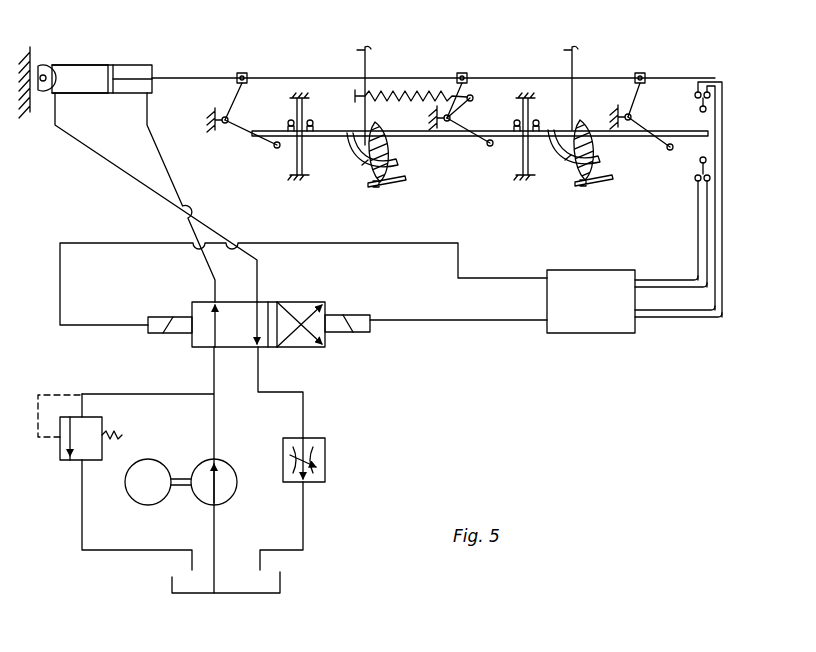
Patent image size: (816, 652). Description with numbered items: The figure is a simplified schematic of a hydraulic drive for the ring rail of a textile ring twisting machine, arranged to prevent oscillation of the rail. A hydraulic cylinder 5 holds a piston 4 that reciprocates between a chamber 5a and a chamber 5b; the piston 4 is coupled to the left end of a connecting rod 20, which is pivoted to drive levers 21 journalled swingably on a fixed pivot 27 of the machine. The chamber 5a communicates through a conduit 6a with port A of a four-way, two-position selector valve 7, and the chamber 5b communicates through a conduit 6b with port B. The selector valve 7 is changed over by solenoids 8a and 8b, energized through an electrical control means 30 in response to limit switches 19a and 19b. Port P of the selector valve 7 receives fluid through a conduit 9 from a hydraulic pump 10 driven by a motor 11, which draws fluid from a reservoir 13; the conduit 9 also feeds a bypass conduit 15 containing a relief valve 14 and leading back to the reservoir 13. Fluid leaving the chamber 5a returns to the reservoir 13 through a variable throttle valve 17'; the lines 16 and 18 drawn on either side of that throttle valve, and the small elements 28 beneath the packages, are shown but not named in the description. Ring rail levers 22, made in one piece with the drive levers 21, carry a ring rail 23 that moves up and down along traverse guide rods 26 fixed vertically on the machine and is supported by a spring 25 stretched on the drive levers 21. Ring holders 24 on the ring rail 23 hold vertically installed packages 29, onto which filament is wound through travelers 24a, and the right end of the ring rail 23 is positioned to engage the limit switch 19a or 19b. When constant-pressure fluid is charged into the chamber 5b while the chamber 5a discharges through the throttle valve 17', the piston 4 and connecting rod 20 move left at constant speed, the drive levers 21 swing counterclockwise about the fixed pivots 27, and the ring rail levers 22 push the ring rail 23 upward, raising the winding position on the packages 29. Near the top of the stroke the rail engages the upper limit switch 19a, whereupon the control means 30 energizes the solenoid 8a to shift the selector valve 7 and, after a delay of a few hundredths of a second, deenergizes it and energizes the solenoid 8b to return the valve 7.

The piston 4 is at (116, 64).
The hydraulic cylinder 5 is at (97, 63).
The chamber 5a is at (75, 68).
The chamber 5b is at (150, 72).
The conduit 6a is at (109, 165).
The conduit 6b is at (160, 152).
The four-way two position selector valve 7 is at (288, 300).
The solenoid 8a is at (170, 318).
The solenoid 8b is at (350, 316).
The conduit 9 is at (216, 409).
The hydraulic pump 10 is at (232, 468).
The motor 11 is at (148, 460).
The reservoir 13 is at (234, 584).
The relief valve 14 is at (66, 460).
The bypass conduit 15 is at (98, 551).
The line 16 is at (305, 404).
The variable throttle valve 17' is at (322, 460).
The return line 18 is at (305, 509).
The limit switch 19a is at (710, 100).
The limit switch 19b is at (710, 168).
The connecting rod 20 is at (305, 76).
The drive lever 21 is at (238, 98).
The ring rail lever 22 is at (248, 138).
The ring rail 23 is at (647, 139).
The ring holder 24 is at (390, 150).
The traveler 24a is at (364, 162).
The spring 25 is at (410, 91).
The traverse guide rod 26 is at (300, 146).
The fixed pivot 27 is at (222, 128).
The brake shoe 28 is at (374, 190).
The package 29 is at (378, 124).
The electrical control means 30 is at (597, 309).